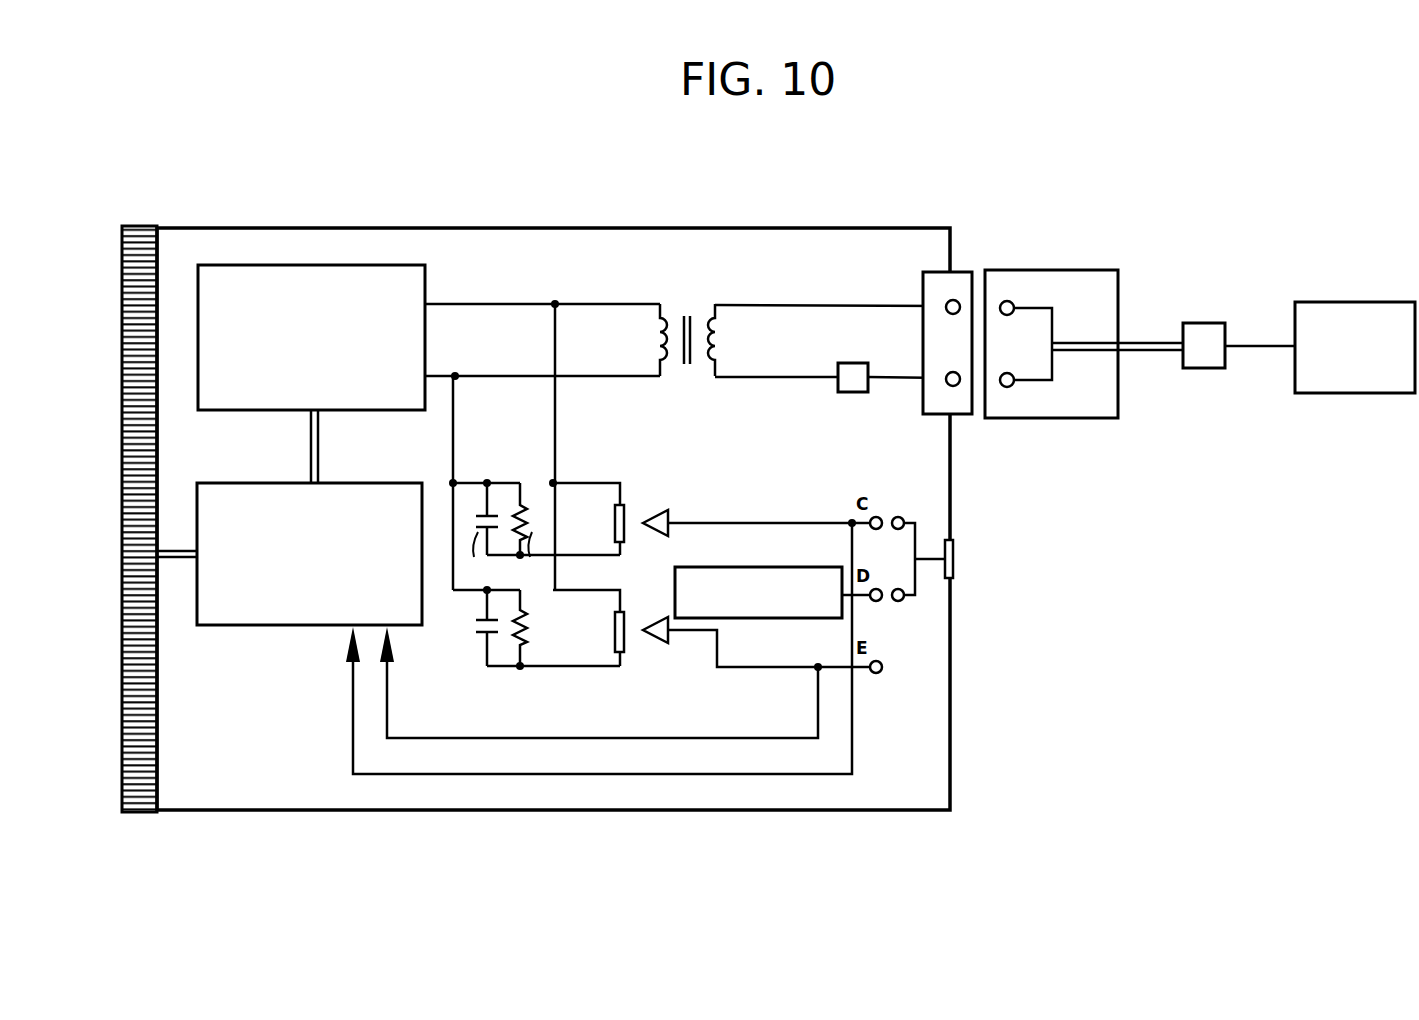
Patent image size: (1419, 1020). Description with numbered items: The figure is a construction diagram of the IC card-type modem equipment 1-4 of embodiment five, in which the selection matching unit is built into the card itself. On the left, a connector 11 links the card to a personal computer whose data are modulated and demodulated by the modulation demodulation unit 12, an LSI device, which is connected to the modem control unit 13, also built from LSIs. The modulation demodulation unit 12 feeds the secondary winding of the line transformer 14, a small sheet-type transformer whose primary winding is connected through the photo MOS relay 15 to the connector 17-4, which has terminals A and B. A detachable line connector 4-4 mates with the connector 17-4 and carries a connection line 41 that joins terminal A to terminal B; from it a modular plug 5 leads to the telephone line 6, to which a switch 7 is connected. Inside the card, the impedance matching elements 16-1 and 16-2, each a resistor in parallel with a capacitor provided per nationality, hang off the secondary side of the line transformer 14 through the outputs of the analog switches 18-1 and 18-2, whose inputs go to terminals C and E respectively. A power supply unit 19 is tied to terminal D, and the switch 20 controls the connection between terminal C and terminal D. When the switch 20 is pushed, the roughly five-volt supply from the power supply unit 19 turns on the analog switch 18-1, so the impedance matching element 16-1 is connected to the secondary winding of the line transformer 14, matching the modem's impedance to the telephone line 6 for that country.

The IC card-type modem equipment 1-4 is at (318, 228).
The connector 11 is at (122, 318).
The modulation demodulation unit 12 is at (228, 412).
The modem control unit 13 is at (238, 628).
The line transformer 14 is at (689, 312).
The photo MOS relay 15 is at (841, 394).
The impedance matching element 16-1 is at (490, 478).
The impedance matching element 16-2 is at (490, 672).
The connector 17-4 is at (962, 272).
The analog switch 18-1 is at (641, 505).
The analog switch 18-2 is at (640, 650).
The power supply unit 19 is at (751, 567).
The switch 20 is at (955, 560).
The line connector 4-4 is at (1051, 307).
The connection line 41 is at (1052, 318).
The modular plug 5 is at (1198, 323).
The telephone line 6 is at (1258, 352).
The switch 7 is at (1343, 302).